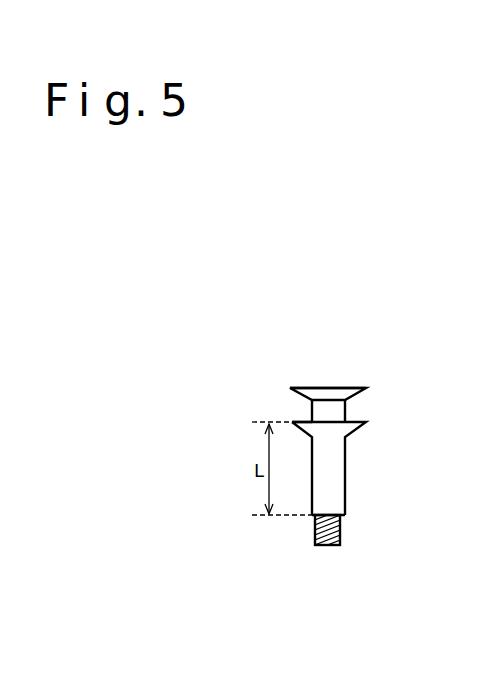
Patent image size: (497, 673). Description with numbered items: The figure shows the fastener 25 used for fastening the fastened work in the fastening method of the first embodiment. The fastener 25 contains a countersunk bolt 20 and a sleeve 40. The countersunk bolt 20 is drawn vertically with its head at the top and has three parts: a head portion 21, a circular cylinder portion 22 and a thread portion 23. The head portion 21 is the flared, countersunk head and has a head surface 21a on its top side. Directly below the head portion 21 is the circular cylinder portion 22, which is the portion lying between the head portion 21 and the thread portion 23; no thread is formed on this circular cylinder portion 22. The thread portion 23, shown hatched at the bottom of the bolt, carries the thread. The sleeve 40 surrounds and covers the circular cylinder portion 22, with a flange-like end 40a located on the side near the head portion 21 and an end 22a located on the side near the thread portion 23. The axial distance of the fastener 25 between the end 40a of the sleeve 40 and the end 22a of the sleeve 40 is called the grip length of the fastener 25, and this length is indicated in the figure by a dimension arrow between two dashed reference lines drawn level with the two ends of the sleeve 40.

The countersunk bolt 20 is at (328, 547).
The head portion 21 is at (357, 398).
The head surface 21a is at (328, 386).
The circular cylinder portion 22 is at (350, 410).
The end 22a is at (318, 518).
The thread portion 23 is at (341, 530).
The fastener 25 is at (302, 374).
The sleeve 40 is at (346, 477).
The end 40a is at (291, 421).